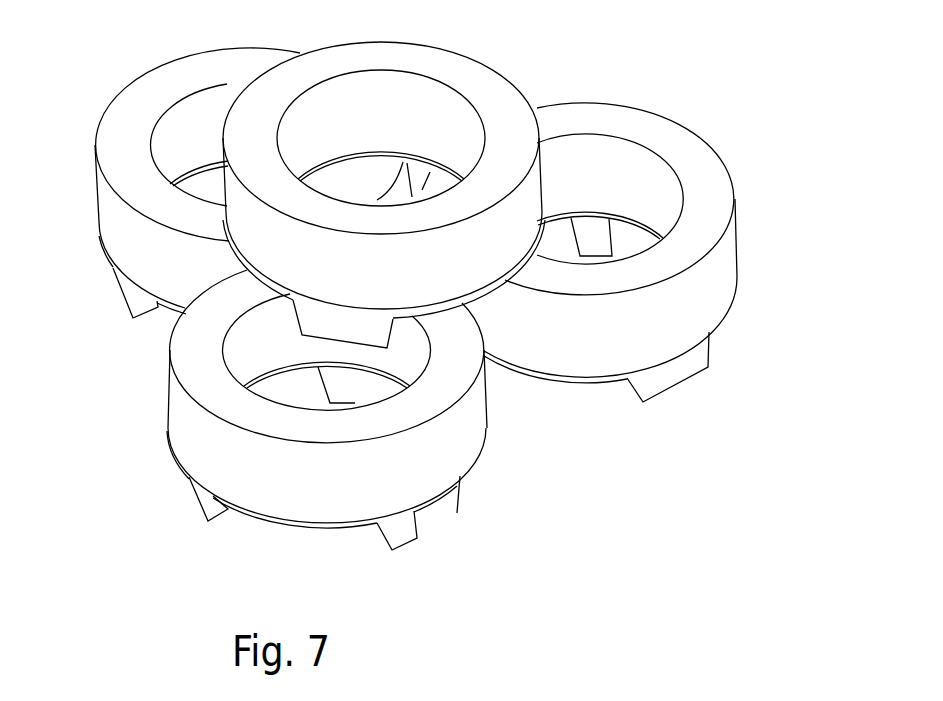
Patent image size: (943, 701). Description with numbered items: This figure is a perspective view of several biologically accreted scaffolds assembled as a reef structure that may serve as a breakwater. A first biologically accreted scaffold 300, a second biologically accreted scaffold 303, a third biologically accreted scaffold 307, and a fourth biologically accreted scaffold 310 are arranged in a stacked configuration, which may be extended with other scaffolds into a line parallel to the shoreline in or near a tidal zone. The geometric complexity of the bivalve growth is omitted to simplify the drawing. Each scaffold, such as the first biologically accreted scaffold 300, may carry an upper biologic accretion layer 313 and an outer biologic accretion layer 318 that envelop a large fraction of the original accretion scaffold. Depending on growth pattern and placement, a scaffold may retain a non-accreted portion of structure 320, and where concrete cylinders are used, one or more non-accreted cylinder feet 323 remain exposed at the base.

The first biologically accreted scaffold 300 is at (668, 375).
The second biologically accreted scaffold 303 is at (203, 500).
The third biologically accreted scaffold 307 is at (113, 302).
The fourth biologically accreted scaffold 310 is at (448, 58).
The upper biologic accretion layer 313 is at (650, 133).
The outer biologic accretion layer 318 is at (733, 284).
The non-accreted portion of structure 320 is at (457, 513).
The non-accreted cylinder foot 323 is at (417, 535).